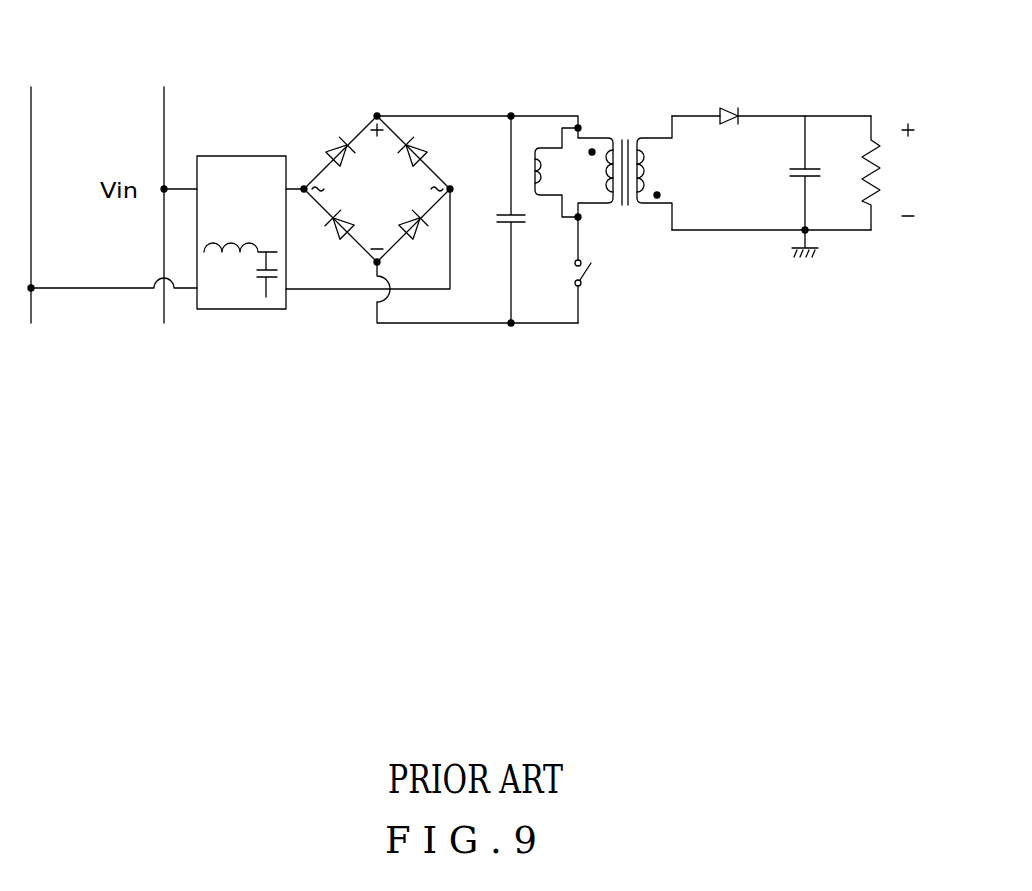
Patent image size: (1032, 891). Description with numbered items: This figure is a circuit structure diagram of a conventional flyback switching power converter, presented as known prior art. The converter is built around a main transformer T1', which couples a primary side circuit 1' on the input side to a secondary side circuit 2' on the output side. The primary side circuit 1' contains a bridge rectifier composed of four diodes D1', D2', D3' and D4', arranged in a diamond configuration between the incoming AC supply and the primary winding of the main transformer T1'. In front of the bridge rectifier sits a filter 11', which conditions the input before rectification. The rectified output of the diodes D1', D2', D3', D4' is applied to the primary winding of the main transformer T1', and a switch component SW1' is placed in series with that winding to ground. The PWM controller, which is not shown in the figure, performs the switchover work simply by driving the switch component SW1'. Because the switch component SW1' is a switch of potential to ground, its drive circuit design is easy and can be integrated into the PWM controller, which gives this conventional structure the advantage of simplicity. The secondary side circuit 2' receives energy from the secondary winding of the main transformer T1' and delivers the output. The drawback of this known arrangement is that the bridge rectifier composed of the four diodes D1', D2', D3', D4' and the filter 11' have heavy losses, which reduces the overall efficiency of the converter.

The primary side circuit 1' is at (432, 171).
The secondary side circuit 2' is at (796, 136).
The filter 11' is at (241, 192).
The diode D1' is at (330, 147).
The diode D2' is at (423, 235).
The diode D3' is at (423, 147).
The diode D4' is at (329, 235).
The main transformer T1' is at (603, 164).
The switch component SW1' is at (607, 270).